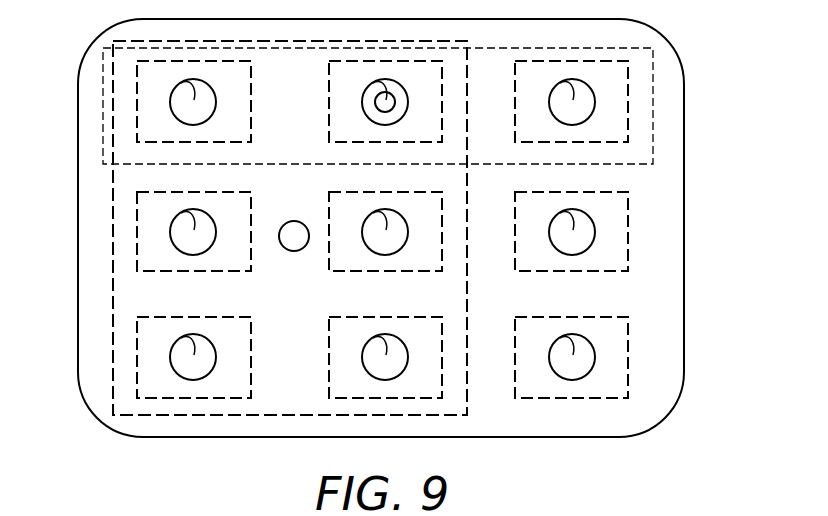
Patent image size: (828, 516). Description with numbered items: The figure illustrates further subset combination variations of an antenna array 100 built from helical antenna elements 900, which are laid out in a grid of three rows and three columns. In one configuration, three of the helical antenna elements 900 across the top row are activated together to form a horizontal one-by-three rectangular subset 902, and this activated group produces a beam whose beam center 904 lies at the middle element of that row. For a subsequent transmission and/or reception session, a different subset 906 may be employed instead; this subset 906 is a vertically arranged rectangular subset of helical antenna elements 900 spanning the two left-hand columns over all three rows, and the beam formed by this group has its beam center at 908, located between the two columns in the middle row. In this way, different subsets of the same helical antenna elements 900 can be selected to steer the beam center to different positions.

The device 100 is at (748, 104).
The helical antenna element 900 is at (170, 100).
The horizontal 1×3 rectangular subset 902 is at (103, 149).
The beam center 904 is at (374, 100).
The vertically arranged rectangular subset 906 is at (113, 334).
The beam center 908 is at (294, 221).